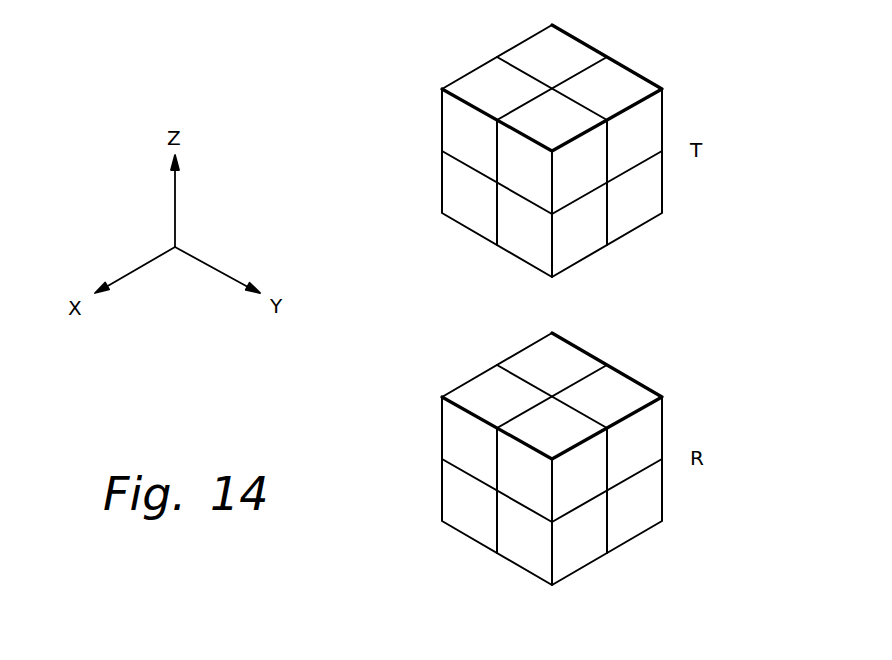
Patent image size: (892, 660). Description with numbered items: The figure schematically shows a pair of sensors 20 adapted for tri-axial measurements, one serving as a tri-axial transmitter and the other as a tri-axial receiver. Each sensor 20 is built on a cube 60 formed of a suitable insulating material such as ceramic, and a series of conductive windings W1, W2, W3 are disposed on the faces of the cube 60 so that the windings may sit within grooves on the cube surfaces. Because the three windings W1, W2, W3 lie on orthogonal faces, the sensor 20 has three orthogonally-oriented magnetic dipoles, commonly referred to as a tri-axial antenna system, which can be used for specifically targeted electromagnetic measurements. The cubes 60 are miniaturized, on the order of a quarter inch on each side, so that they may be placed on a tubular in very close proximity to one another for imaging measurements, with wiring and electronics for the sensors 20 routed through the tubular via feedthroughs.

The sensor 20 is at (396, 94).
The cube 60 is at (633, 70).
The conductive winding W1 is at (498, 365).
The conductive winding W2 is at (403, 471).
The conductive winding W3 is at (448, 560).